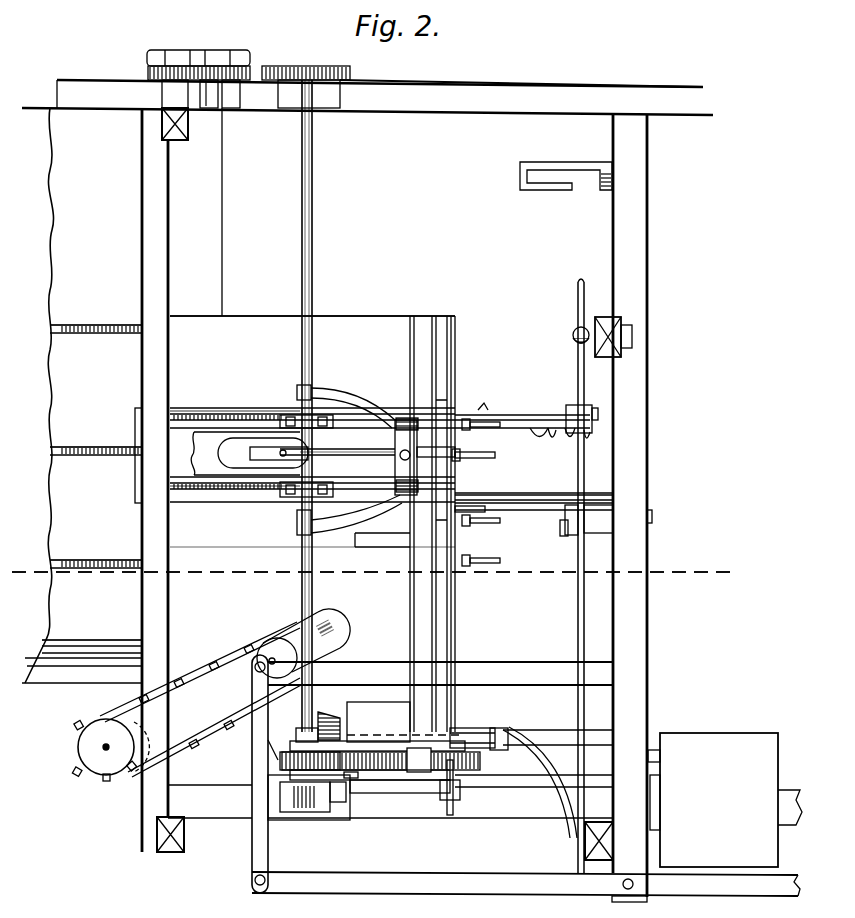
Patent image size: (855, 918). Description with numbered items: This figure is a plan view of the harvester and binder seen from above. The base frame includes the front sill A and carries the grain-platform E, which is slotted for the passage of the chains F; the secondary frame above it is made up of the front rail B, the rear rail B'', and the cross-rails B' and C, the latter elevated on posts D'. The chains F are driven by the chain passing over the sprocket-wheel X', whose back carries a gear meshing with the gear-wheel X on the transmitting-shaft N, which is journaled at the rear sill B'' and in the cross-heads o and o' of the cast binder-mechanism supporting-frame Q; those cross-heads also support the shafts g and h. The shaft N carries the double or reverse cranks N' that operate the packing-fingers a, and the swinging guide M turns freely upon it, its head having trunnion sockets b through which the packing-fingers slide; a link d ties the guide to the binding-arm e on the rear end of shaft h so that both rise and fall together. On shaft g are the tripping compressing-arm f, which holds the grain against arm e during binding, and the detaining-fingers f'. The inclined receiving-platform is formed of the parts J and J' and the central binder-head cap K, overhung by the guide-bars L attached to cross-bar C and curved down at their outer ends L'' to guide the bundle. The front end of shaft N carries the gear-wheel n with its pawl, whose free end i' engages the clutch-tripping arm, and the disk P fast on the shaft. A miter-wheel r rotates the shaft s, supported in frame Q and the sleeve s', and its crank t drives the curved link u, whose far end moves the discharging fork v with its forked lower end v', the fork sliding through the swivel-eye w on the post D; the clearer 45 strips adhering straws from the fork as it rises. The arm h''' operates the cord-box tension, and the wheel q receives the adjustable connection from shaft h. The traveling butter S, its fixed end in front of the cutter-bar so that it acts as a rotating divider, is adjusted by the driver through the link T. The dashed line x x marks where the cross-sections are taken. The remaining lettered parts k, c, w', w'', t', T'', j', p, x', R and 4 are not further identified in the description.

The sprocket-wheel X' is at (198, 55).
The gear-wheel X is at (306, 61).
The rear rail B'' is at (521, 75).
The posts D' is at (393, 492).
The grain-platform E is at (116, 413).
The chains F is at (92, 479).
The transmitting-shaft N is at (316, 406).
The clearer 45 is at (566, 168).
The cross-rail C is at (182, 480).
The receiving-platform part J' is at (312, 353).
The receiving-platform part J is at (262, 561).
The packing-fingers a is at (222, 426).
The guide-bars L is at (312, 460).
The binder-head cap K is at (245, 453).
The slot k is at (263, 453).
The double or reverse cranks N' is at (319, 429).
The swinging guide M is at (349, 458).
The trunnion sockets b is at (406, 420).
The pivot piece c is at (425, 457).
The binding-arm e is at (337, 444).
The link d is at (347, 467).
The tripping compressing-arm f is at (474, 459).
The detaining-fingers f' is at (482, 494).
The sleeve or hub s' is at (487, 398).
The curved outer end of guide-bars L'' is at (534, 456).
The cross-head o is at (416, 625).
The shaft g is at (445, 612).
The shaft h is at (461, 505).
The binder-mechanism supporting-frame Q is at (415, 591).
The front sill A is at (440, 665).
The link u is at (574, 576).
The swivel-eye w is at (570, 336).
The post D is at (612, 328).
The fork v is at (580, 402).
The forked lower end v' is at (569, 443).
The bracket w' is at (558, 533).
The bracket w'' is at (579, 523).
The cross-rail B' is at (633, 542).
The section line x x is at (369, 576).
The butter-belt S is at (187, 701).
The roller t' is at (291, 644).
The lever T'' is at (263, 774).
The link j' is at (272, 749).
The gear-wheel n is at (278, 760).
The miter-wheel r is at (326, 719).
The shaft s is at (399, 725).
The gear p is at (396, 788).
The cross-head o' is at (472, 726).
The curved guide x' is at (540, 782).
The crank t is at (524, 751).
The arm h''' is at (579, 751).
The front rail B is at (390, 791).
The wheel q is at (465, 800).
The disk P is at (309, 806).
The free end of pawl i' is at (336, 816).
The bracket 4 is at (352, 780).
The link T is at (526, 869).
The box R is at (725, 800).